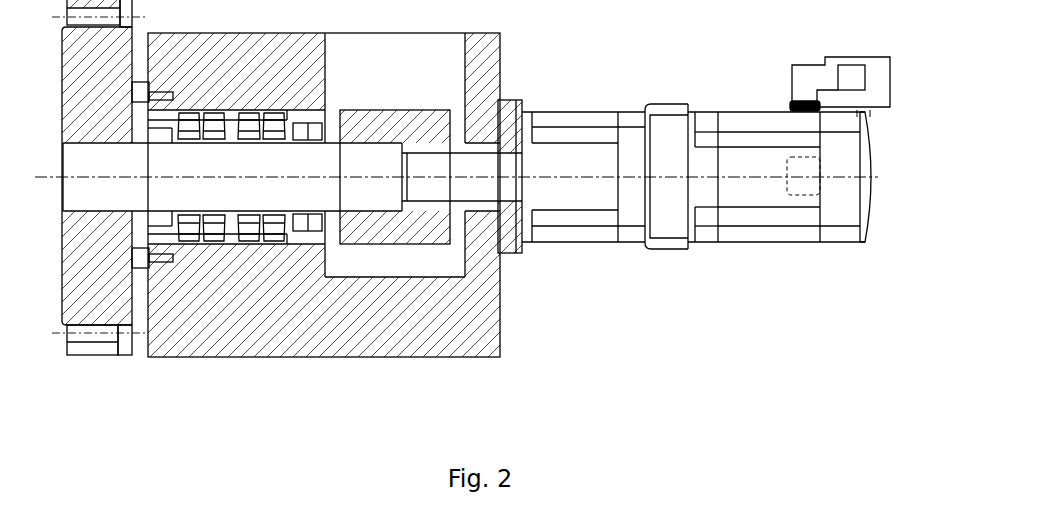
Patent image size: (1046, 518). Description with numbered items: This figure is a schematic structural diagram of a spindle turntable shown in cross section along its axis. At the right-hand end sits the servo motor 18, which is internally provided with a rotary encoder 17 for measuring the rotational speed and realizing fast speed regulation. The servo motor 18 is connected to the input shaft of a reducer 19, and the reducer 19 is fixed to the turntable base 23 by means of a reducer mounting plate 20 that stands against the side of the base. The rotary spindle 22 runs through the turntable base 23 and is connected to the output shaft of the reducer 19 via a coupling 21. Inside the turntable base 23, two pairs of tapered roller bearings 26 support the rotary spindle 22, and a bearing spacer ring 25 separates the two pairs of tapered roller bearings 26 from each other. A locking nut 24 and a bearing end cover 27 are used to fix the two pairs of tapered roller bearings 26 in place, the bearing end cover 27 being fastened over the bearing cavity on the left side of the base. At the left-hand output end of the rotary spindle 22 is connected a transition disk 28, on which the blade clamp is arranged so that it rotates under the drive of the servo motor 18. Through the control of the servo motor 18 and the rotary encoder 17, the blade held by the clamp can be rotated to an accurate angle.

The rotary encoder 17 is at (842, 195).
The servo motor 18 is at (742, 218).
The reducer 19 is at (605, 218).
The reducer mounting plate 20 is at (508, 245).
The coupling 21 is at (437, 230).
The rotary spindle 22 is at (382, 193).
The turntable base 23 is at (377, 317).
The locking nut 24 is at (305, 220).
The bearing spacer ring 25 is at (235, 237).
The tapered roller bearings 26 is at (190, 235).
The bearing end cover 27 is at (140, 238).
The transition disk 28 is at (100, 272).